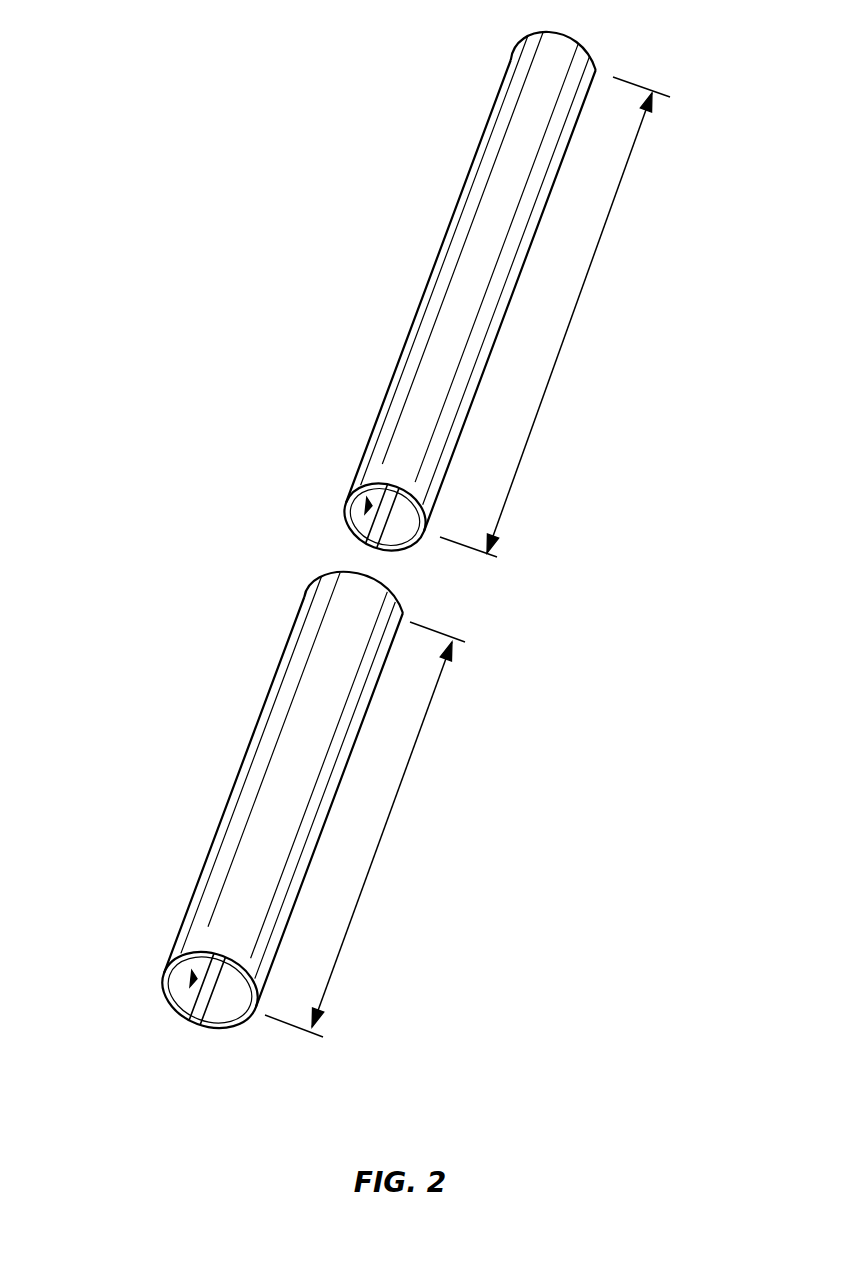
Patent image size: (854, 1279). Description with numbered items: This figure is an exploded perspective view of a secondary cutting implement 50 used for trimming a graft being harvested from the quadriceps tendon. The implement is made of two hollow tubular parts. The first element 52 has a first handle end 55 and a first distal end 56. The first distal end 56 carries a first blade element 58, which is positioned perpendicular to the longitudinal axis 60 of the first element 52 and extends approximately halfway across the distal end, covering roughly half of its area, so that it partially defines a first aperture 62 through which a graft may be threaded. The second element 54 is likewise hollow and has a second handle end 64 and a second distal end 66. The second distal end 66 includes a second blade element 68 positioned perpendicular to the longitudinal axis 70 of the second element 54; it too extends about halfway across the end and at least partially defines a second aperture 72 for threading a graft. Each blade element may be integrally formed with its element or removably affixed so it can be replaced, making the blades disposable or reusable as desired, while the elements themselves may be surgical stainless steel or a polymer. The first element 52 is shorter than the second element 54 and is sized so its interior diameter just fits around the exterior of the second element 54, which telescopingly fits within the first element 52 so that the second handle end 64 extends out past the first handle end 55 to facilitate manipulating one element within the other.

The secondary cutting implement 50 is at (256, 238).
The first element 52 is at (243, 760).
The second element 54 is at (445, 237).
The first handle end 55 is at (305, 600).
The first distal end 56 is at (178, 958).
The first blade element 58 is at (218, 992).
The longitudinal axis 60 is at (382, 833).
The first aperture 62 is at (187, 990).
The second handle end 64 is at (512, 58).
The second distal end 66 is at (353, 490).
The second blade element 68 is at (390, 518).
The longitudinal axis 70 is at (578, 308).
The second aperture 72 is at (352, 515).